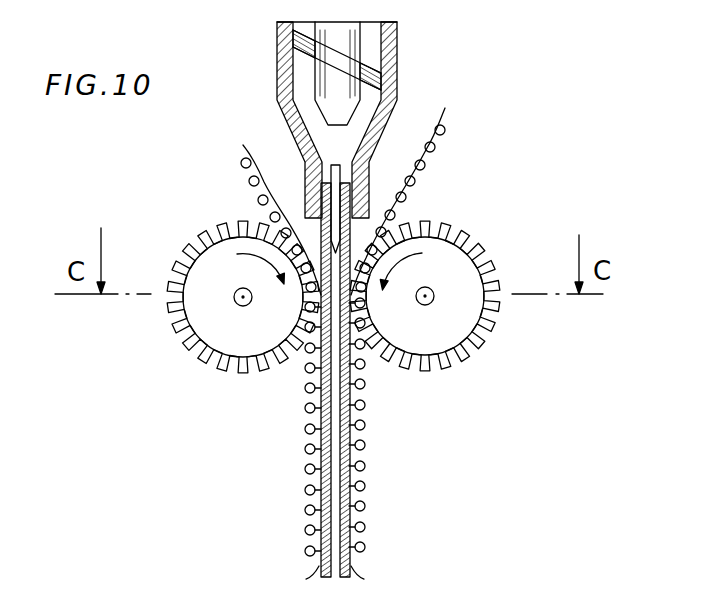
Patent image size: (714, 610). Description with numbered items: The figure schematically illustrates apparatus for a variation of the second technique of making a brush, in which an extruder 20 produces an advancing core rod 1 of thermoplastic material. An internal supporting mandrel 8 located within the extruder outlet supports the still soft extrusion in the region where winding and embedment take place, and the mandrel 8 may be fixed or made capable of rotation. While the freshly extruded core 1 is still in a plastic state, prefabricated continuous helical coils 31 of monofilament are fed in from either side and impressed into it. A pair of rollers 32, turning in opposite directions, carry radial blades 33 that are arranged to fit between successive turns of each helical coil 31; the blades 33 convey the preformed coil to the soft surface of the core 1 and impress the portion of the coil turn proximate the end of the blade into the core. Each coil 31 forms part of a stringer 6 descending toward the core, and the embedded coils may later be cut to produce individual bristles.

The core rod 1 is at (318, 538).
The stringer tape 6 is at (345, 201).
The internal supporting mandrel 8 is at (334, 190).
The extruder 20 is at (398, 52).
The helical coils 31 is at (259, 199).
The rollers 32 is at (247, 344).
The radial blades 33 is at (205, 360).